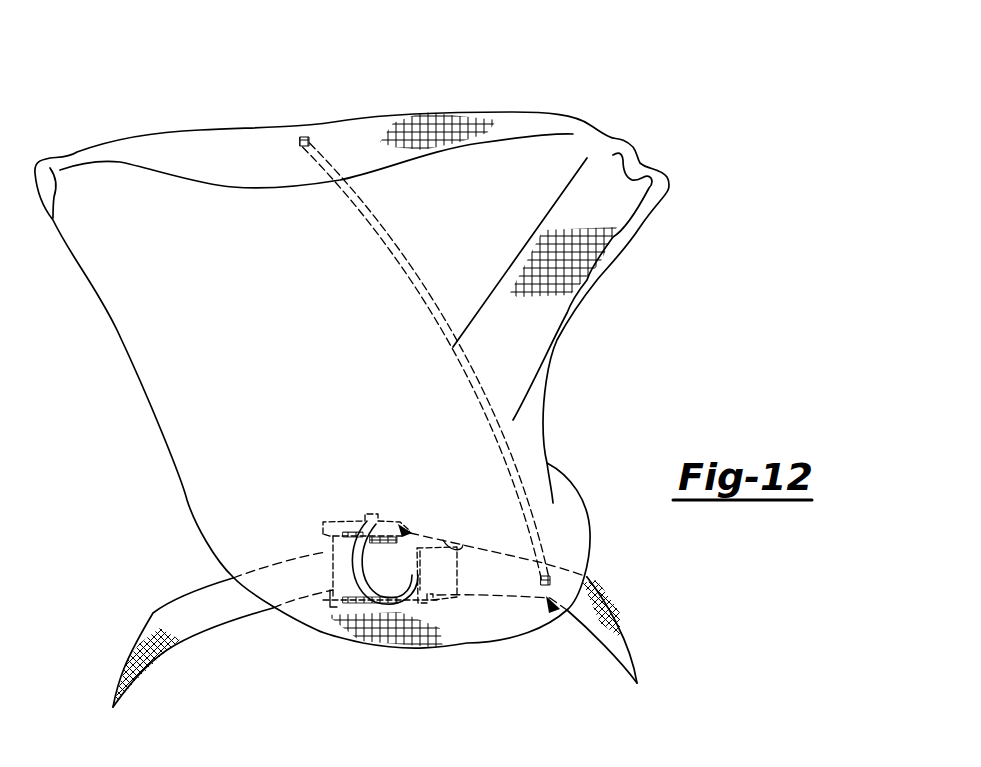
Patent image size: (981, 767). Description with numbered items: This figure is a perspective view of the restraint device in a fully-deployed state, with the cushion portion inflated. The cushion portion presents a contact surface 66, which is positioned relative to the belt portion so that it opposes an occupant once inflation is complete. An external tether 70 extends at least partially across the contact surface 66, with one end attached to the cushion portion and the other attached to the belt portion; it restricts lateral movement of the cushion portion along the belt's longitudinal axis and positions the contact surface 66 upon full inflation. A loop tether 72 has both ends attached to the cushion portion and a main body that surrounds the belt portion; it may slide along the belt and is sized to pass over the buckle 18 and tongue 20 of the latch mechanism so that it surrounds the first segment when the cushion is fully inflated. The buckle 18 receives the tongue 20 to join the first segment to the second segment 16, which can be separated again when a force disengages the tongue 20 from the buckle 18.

The contact surface 66 is at (246, 213).
The external tether 70 is at (427, 287).
The buckle 18 is at (348, 530).
The loop tether 72 is at (333, 593).
The tongue 20 is at (427, 607).
The second segment 16 is at (551, 602).